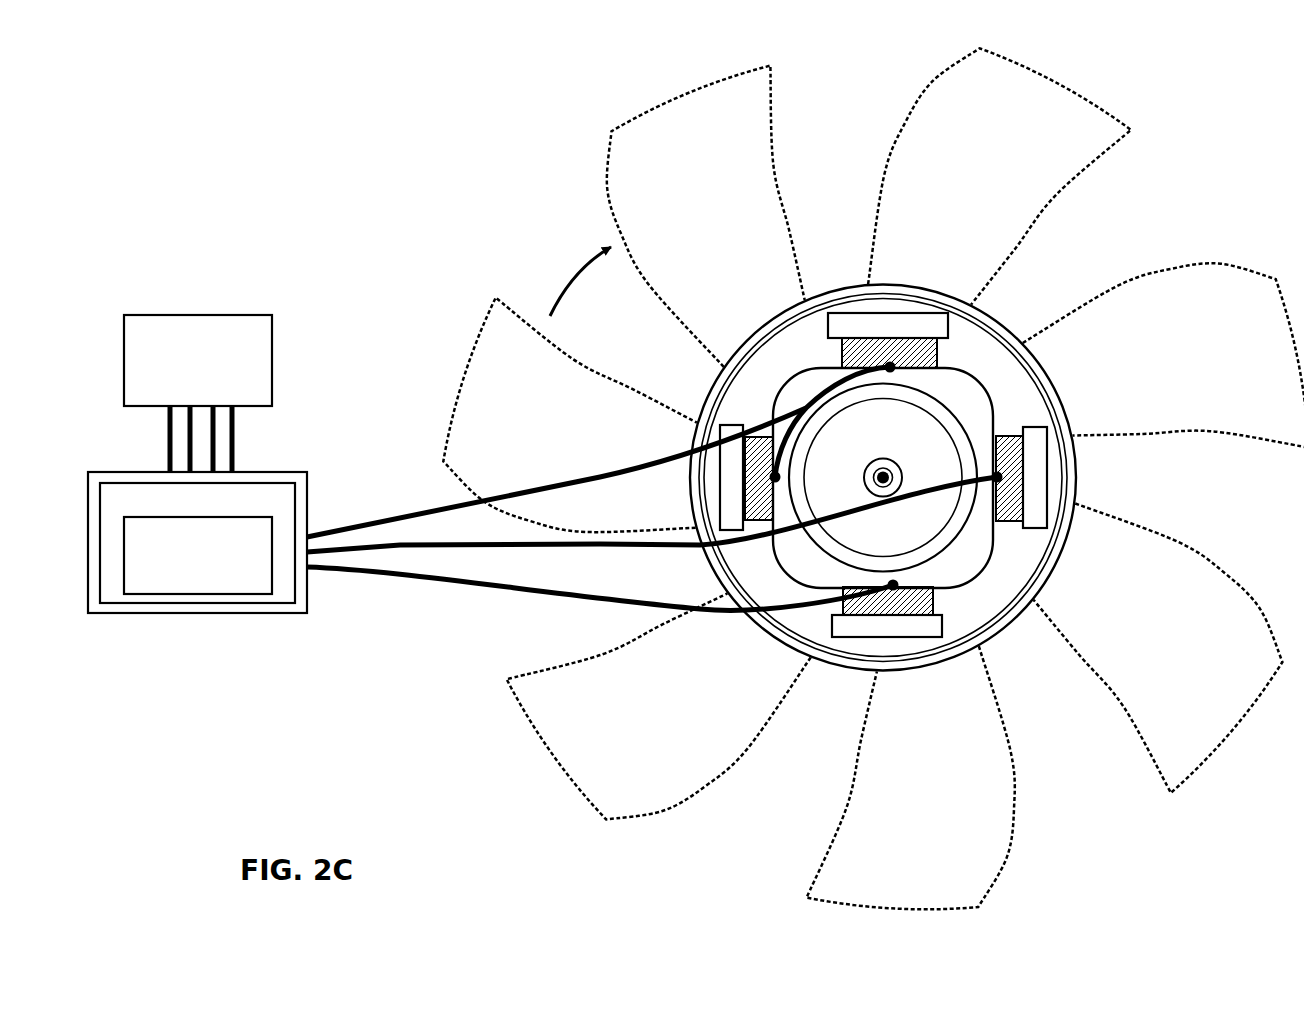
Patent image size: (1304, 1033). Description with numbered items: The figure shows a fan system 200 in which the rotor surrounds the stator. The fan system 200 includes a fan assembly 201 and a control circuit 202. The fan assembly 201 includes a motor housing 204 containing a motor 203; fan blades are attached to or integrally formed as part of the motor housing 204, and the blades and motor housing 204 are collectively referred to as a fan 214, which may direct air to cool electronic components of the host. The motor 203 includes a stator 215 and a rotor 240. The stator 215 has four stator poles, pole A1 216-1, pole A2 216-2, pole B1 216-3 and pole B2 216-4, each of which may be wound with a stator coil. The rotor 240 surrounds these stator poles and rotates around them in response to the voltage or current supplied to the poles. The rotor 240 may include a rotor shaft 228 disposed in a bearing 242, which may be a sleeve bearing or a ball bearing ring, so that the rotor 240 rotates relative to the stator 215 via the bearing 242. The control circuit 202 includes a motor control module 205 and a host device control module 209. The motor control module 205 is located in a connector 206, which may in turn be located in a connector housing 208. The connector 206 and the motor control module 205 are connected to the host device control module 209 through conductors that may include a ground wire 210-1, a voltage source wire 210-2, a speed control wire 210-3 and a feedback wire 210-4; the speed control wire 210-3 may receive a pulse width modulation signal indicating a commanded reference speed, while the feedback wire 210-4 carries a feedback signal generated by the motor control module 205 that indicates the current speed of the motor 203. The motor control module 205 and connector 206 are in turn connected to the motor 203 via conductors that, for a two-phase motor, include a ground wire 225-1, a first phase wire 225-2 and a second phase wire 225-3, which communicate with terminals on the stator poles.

The fan system 200 is at (252, 120).
The fan assembly 201 is at (516, 279).
The control circuit 202 is at (333, 356).
The motor 203 is at (986, 344).
The motor housing 204 is at (768, 321).
The motor control module 205 is at (202, 597).
The connector 206 is at (278, 482).
The connector housing 208 is at (290, 615).
The host device control module 209 is at (200, 315).
The ground wire 210-1 is at (168, 418).
The voltage source wire 210-2 is at (190, 440).
The speed control wire 210-3 is at (210, 454).
The feedback wire 210-4 is at (234, 433).
The fan 214 is at (1108, 117).
The stator 215 is at (982, 566).
The pole A1 216-1 is at (831, 334).
The pole A2 216-2 is at (933, 589).
The pole B1 216-3 is at (724, 419).
The pole B2 216-4 is at (1034, 428).
The ground wire 225-1 is at (355, 524).
The first phase wire 225-2 is at (420, 546).
The second phase wire 225-3 is at (423, 585).
The rotor shaft 228 is at (890, 465).
The rotor 240 is at (1068, 493).
The bearing 242 is at (953, 430).